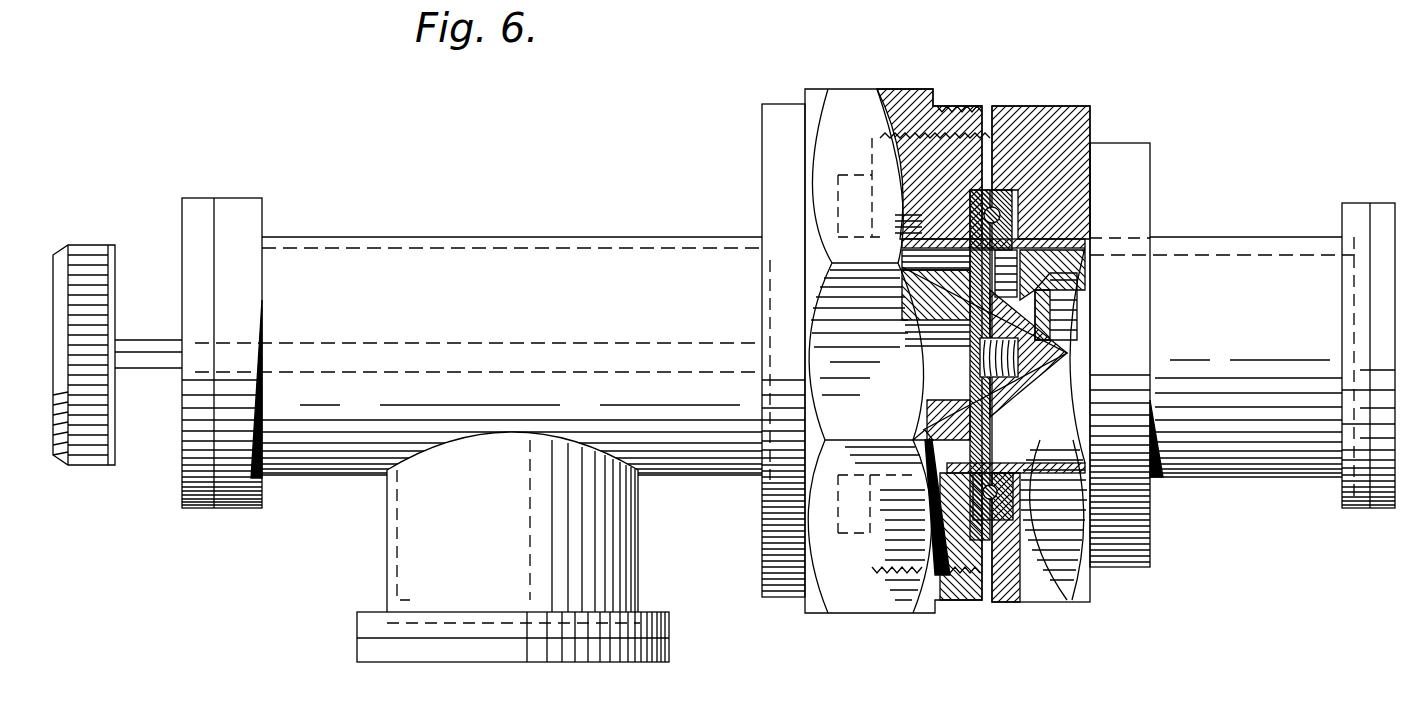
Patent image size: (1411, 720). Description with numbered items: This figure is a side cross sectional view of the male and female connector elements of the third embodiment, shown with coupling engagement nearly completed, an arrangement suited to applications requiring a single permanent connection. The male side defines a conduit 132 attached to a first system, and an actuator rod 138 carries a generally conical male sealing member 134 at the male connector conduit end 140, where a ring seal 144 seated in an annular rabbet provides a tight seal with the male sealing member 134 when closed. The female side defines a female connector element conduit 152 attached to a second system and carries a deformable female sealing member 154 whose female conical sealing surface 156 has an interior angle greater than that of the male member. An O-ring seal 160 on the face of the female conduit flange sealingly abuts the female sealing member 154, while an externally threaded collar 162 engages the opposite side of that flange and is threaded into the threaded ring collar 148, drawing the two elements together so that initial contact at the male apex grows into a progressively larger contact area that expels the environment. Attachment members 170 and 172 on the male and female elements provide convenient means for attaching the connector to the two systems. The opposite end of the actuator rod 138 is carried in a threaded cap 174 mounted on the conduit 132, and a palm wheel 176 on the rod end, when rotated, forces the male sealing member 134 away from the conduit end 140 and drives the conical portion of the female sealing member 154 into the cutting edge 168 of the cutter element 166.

The conduit 132 is at (662, 253).
The male sealing member 134 is at (972, 380).
The actuator rod 138 is at (138, 350).
The male connector conduit end 140 is at (950, 408).
The ring seal 144 is at (925, 328).
The threaded ring collar 148 is at (911, 90).
The female connector element conduit 152 is at (1241, 258).
The female sealing member 154 is at (920, 438).
The female conical sealing surface 156 is at (1080, 340).
The O-ring seal 160 is at (995, 505).
The externally threaded collar 162 is at (950, 148).
The cutter element 166 is at (1090, 258).
The cutting edge 168 is at (1082, 292).
The attachment member 170 is at (510, 652).
The attachment member 172 is at (1376, 205).
The threaded cap 174 is at (237, 200).
The palm wheel 176 is at (88, 247).